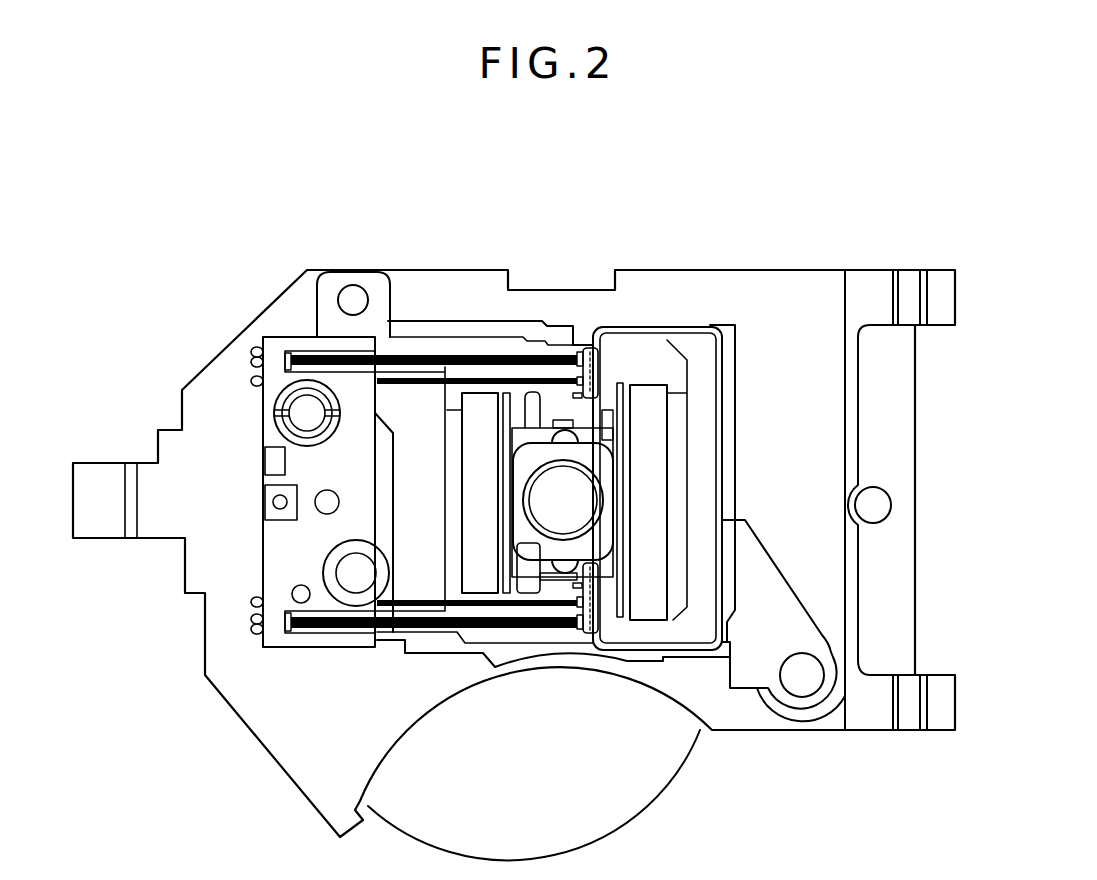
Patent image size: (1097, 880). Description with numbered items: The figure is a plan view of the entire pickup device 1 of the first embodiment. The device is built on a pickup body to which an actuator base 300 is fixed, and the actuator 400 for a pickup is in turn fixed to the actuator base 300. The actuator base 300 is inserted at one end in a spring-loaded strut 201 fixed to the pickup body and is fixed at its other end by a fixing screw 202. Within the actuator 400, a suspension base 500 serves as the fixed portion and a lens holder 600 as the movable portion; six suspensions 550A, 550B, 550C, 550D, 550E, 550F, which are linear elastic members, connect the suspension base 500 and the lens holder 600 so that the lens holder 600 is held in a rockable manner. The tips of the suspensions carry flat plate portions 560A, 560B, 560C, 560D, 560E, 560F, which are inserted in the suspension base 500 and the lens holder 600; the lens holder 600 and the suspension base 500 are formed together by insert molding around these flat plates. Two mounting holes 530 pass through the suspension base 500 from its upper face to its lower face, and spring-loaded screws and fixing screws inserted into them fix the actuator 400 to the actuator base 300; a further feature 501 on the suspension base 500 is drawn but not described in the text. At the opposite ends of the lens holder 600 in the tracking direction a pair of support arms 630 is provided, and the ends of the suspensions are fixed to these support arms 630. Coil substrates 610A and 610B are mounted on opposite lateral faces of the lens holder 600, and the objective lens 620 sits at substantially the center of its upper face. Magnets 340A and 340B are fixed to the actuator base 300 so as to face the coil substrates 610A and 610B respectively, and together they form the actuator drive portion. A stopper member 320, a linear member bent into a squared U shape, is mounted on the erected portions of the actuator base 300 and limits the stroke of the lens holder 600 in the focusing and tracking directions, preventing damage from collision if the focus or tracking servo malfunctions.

The pickup device 1 is at (1018, 438).
The spring-loaded strut 201 is at (802, 681).
The fixing screw 202 is at (350, 290).
The actuator base 300 is at (389, 292).
The stopper member 320 is at (723, 385).
The magnet 340A is at (480, 399).
The magnet 340B is at (652, 384).
The actuator for a pickup 400 is at (492, 203).
The suspension base 500 is at (262, 431).
The positioning hole 501 is at (275, 501).
The mounting hole 530 is at (355, 552).
The suspension 550A is at (424, 383).
The suspension 550B is at (432, 607).
The suspension 550C is at (386, 632).
The suspension 550D is at (527, 631).
The suspension 550E is at (396, 354).
The suspension 550F is at (497, 354).
The flat plate portion 560A is at (250, 362).
The flat plate portion 560B is at (250, 619).
The flat plate portion 560C is at (250, 631).
The flat plate portion 560D is at (250, 602).
The flat plate portion 560E is at (250, 382).
The flat plate portion 560F is at (256, 347).
The lens holder 600 is at (597, 445).
The coil substrate 610A is at (507, 394).
The coil substrate 610B is at (619, 388).
The objective lens 620 is at (588, 500).
The support arm 630 is at (590, 634).